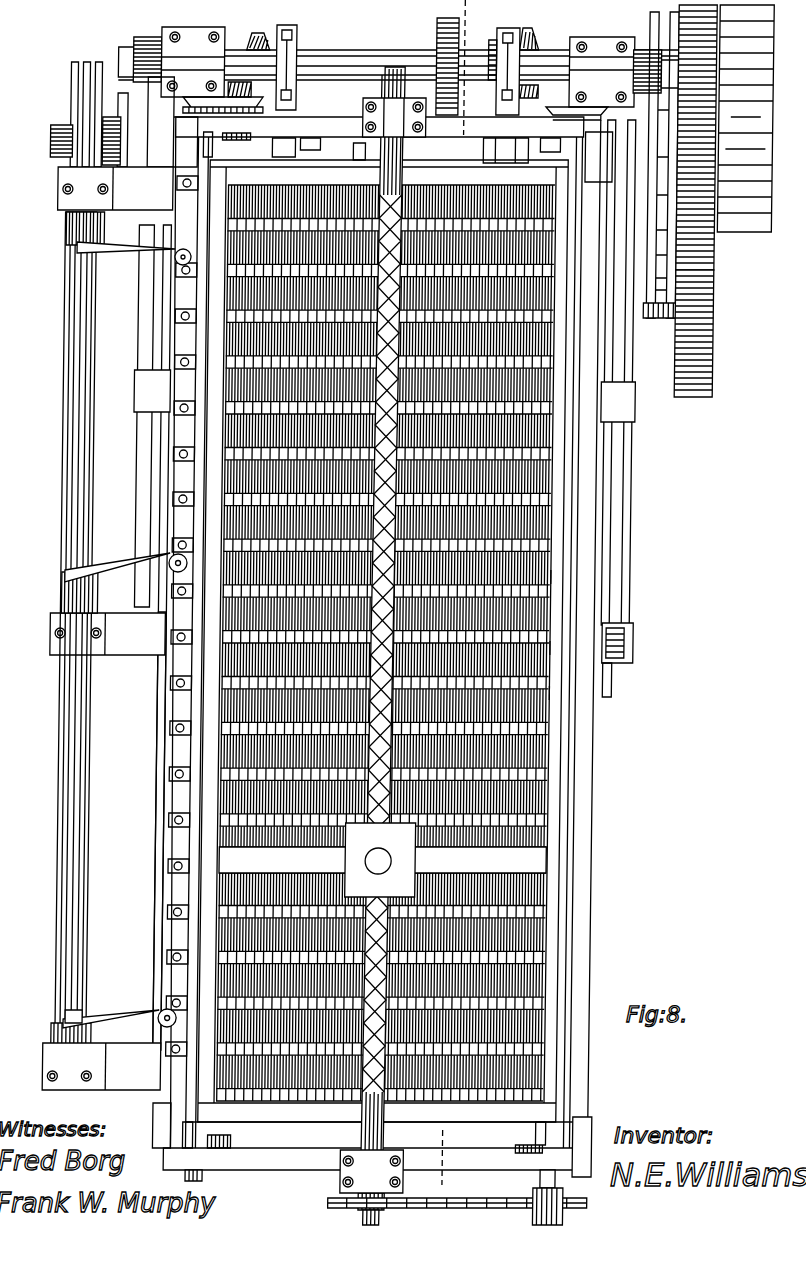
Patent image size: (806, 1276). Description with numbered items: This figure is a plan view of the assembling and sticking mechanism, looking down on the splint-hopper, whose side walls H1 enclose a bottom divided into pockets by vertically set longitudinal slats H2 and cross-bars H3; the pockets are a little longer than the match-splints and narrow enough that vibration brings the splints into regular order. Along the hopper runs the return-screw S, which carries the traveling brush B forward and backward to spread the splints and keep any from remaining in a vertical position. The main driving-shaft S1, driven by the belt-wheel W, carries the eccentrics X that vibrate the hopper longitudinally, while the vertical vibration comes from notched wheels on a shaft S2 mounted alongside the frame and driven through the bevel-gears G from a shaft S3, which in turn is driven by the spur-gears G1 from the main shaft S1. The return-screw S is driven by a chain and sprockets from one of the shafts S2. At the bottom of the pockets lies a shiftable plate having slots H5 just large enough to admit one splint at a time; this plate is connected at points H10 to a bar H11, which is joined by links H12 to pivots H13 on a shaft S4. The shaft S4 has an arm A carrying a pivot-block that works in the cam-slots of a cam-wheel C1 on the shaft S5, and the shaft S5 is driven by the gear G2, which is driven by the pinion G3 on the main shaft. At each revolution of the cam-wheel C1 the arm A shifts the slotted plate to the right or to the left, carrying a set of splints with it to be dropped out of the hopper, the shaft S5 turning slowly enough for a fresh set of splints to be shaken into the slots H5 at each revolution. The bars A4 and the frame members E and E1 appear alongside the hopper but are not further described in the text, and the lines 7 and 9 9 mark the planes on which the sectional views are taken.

The cam-wheel C1 is at (68, 107).
The cam shaft S5 is at (50, 135).
The arm A is at (70, 231).
The links H12 is at (129, 1020).
The guide bar A4 is at (638, 502).
The section line 9 is at (56, 645).
The rocking shaft S4 is at (66, 822).
The bar H11 is at (166, 888).
The connecting points H10 is at (177, 958).
The pivots H13 is at (76, 1013).
The hopper side walls H1 is at (386, 641).
The traveling brush B is at (334, 860).
The shaft S3 is at (396, 885).
The outer frame E is at (582, 634).
The frame corner E1 is at (584, 1086).
The vibrator shaft S2 is at (596, 1232).
The return-screw S is at (396, 1219).
The section line 7 is at (454, 600).
The bevel-gears G is at (252, 34).
The spur-gears G1 is at (459, 42).
The main driving-shaft S1 is at (347, 51).
The eccentrics X is at (288, 31).
The pinion G3 is at (710, 88).
The belt-wheel W is at (742, 228).
The gear G2 is at (713, 395).
The slots H5 is at (546, 577).
The longitudinal slats H2 is at (546, 648).
The cross-bars H3 is at (546, 693).